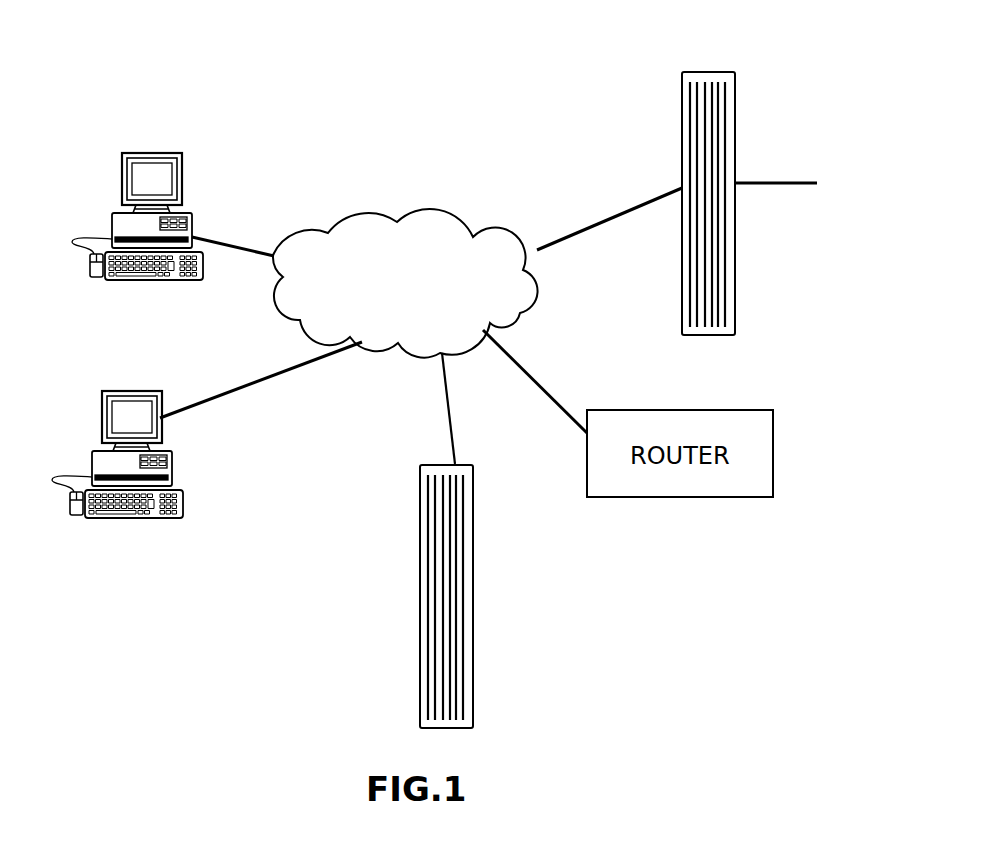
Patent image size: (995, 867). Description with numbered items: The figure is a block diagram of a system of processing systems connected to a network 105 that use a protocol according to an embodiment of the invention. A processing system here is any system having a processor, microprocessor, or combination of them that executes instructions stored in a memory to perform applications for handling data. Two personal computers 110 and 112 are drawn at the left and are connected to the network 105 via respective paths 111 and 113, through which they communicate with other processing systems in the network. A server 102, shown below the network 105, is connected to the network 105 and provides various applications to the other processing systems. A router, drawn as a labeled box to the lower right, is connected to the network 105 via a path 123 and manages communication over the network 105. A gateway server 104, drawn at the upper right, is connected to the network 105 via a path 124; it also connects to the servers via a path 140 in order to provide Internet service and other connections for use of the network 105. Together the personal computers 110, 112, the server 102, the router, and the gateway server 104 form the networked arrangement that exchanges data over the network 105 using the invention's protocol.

The personal computer 110 is at (122, 171).
The personal computer 112 is at (102, 395).
The network 105 is at (447, 211).
The path 111 is at (210, 237).
The path 113 is at (280, 374).
The path 124 is at (590, 223).
The gateway server 104 is at (718, 71).
The path 140 is at (758, 179).
The path 123 is at (560, 403).
The server 102 is at (474, 564).